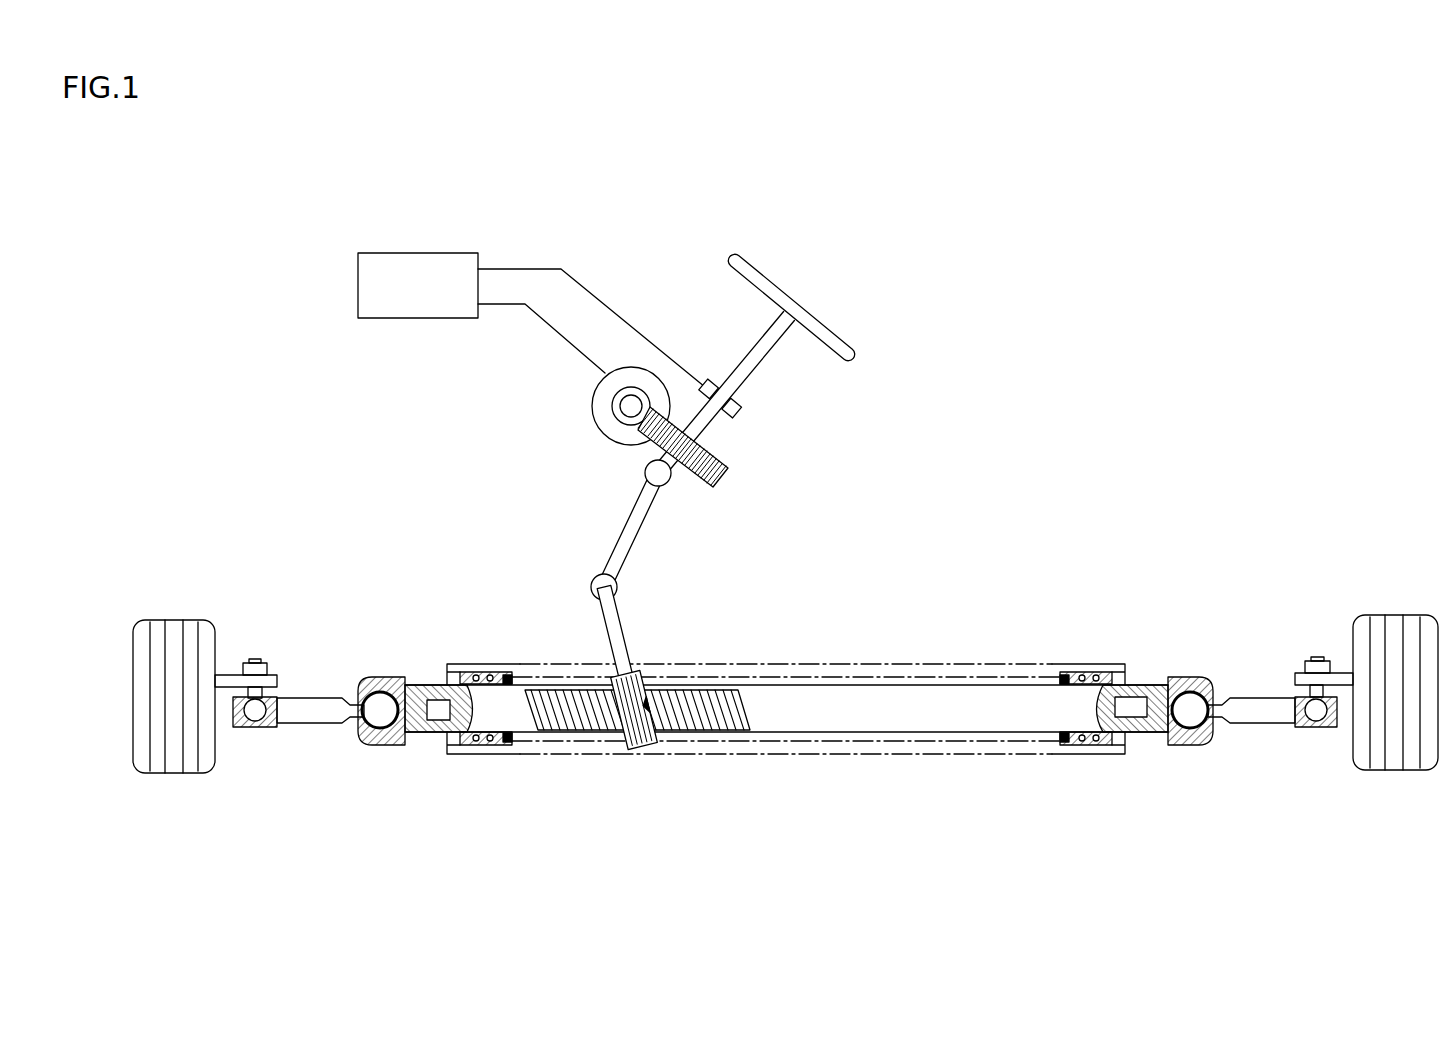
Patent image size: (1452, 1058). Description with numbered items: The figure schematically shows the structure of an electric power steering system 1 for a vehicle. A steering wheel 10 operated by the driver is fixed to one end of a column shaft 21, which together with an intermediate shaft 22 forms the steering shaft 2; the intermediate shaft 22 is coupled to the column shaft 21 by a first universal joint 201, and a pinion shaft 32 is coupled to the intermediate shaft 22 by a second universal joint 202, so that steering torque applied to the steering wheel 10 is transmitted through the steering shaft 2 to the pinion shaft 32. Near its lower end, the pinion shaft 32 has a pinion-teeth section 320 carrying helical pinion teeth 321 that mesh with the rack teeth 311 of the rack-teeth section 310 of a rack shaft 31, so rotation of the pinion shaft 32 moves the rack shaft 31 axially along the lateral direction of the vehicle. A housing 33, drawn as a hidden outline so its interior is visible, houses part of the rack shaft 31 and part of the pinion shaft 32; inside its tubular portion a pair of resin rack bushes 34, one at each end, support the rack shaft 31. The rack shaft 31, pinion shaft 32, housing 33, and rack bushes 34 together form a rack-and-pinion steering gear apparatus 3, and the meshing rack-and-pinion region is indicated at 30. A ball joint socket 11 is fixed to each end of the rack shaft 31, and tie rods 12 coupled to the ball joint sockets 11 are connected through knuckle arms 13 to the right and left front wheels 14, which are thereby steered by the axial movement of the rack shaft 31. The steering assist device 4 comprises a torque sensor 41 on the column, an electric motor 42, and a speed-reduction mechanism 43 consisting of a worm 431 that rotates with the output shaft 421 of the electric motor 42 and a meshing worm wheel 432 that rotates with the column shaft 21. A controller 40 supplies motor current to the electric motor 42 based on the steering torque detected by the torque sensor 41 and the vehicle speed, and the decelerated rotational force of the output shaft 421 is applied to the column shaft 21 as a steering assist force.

The electric power steering system 1 is at (938, 353).
The steering wheel 10 is at (838, 335).
The steering shaft 2 is at (782, 475).
The column shaft 21 is at (717, 440).
The intermediate shaft 22 is at (642, 532).
The first universal joint 201 is at (650, 477).
The second universal joint 202 is at (597, 588).
The steering assist device 4 is at (588, 377).
The controller 40 is at (386, 252).
The torque sensor 41 is at (743, 410).
The electric motor 42 is at (593, 395).
The output shaft 421 is at (628, 408).
The speed-reduction mechanism 43 is at (530, 433).
The worm 431 is at (613, 417).
The worm wheel 432 is at (653, 447).
The steering gear apparatus 3 is at (987, 645).
The ball screw mechanism 30 is at (607, 682).
The rack shaft 31 is at (786, 713).
The rack-teeth section 310 is at (740, 739).
The rack teeth 311 is at (695, 730).
The pinion shaft 32 is at (618, 607).
The pinion-teeth section 320 is at (648, 670).
The pinion teeth 321 is at (642, 745).
The housing 33 is at (1000, 753).
The rack bushes 34 is at (480, 672).
The ball joint socket 11 is at (373, 677).
The tie rods 12 is at (317, 723).
The knuckle arms 13 is at (225, 675).
The front wheels 14 is at (175, 620).